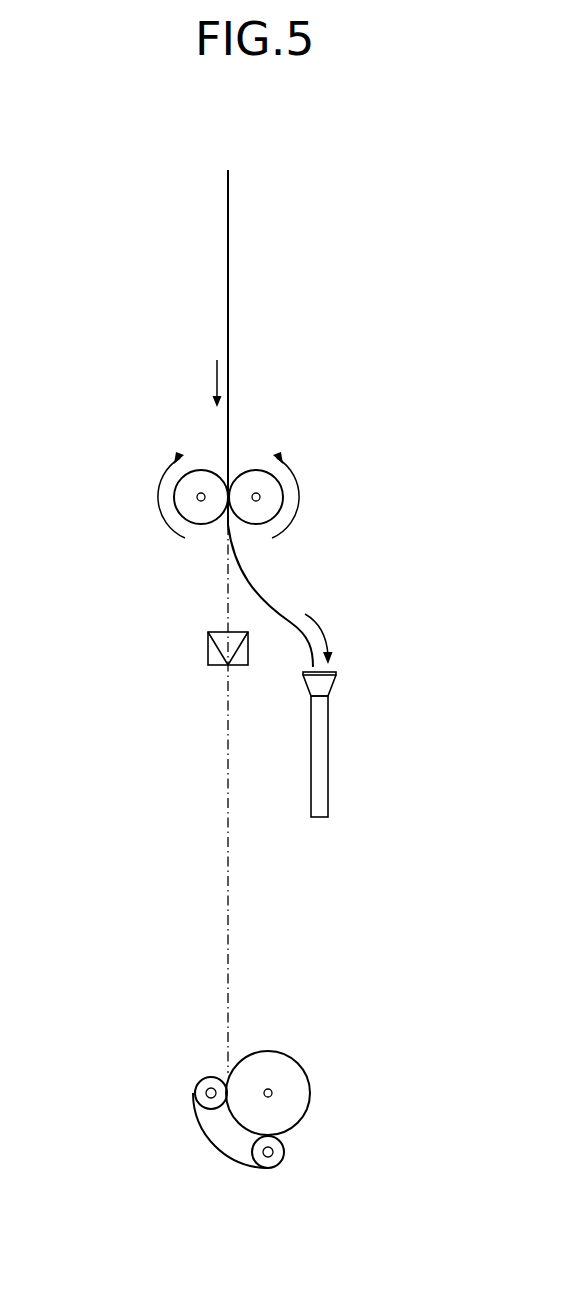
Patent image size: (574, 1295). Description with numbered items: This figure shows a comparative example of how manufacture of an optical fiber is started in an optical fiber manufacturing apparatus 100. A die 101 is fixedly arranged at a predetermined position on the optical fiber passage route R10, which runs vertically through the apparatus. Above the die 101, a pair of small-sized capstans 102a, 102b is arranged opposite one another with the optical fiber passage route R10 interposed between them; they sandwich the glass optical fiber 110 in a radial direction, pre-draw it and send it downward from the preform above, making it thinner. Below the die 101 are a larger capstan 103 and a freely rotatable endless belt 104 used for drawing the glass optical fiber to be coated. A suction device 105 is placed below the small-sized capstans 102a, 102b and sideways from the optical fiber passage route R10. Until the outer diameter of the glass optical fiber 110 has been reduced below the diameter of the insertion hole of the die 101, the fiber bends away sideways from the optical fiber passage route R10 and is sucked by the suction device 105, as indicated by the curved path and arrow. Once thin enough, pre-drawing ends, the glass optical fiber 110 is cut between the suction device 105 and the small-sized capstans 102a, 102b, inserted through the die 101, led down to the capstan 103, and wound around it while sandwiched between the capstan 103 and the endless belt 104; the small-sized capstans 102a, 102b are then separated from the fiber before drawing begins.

The optical fiber manufacturing apparatus 100 is at (317, 191).
The glass optical fiber 110 is at (228, 249).
The small-sized capstan 102a is at (200, 526).
The small-sized capstan 102b is at (257, 526).
The die 101 is at (208, 646).
The optical fiber passage route R10 is at (227, 756).
The suction device 105 is at (328, 755).
The capstan 103 is at (310, 1093).
The endless belt 104 is at (213, 1145).